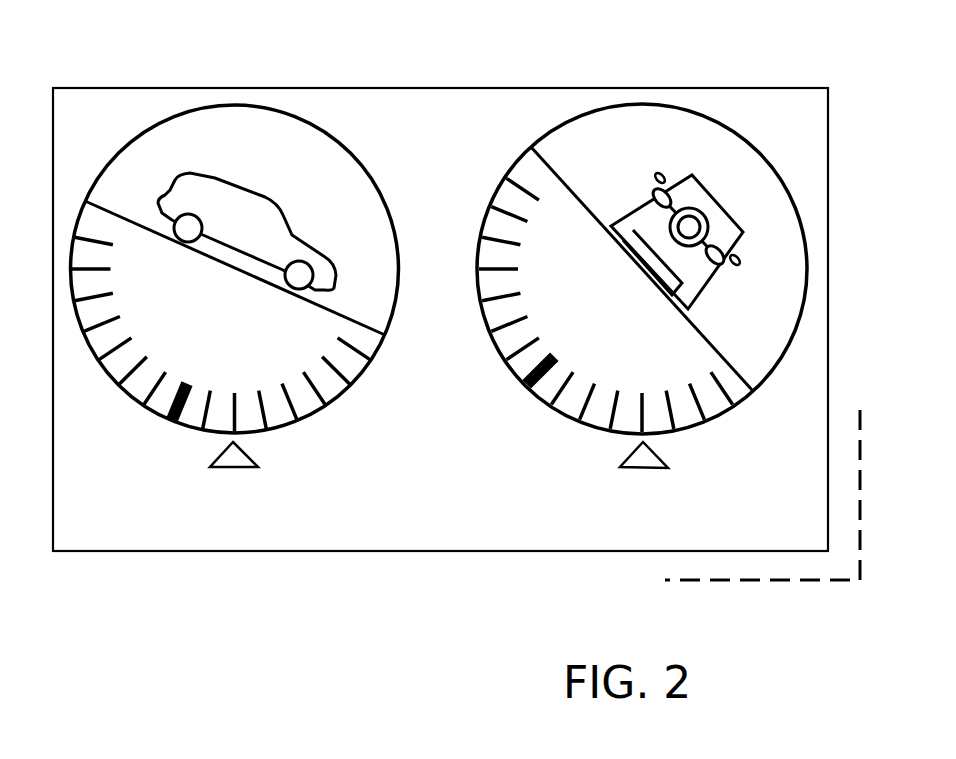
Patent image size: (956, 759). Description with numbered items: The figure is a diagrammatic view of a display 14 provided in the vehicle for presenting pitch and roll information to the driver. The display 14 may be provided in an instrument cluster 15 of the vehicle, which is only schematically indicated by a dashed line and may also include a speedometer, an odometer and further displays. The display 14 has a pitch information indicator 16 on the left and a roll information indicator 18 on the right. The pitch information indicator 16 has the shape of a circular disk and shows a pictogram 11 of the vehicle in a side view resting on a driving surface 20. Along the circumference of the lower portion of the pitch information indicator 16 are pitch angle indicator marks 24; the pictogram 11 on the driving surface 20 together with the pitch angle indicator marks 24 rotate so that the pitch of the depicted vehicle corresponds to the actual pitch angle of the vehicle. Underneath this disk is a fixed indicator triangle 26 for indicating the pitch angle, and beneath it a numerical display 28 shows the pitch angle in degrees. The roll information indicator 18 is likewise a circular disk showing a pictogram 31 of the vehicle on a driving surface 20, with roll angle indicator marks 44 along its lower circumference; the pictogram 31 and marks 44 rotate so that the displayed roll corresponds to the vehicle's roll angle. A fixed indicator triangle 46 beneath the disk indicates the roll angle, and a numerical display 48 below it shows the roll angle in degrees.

The pictogram of the vehicle 11 is at (195, 187).
The display 14 is at (338, 108).
The instrument cluster 15 is at (800, 583).
The pitch information indicator 16 is at (135, 148).
The roll information indicator 18 is at (573, 118).
The driving surface 20 is at (356, 316).
The pitch angle indicator marks 24 is at (297, 431).
The indicator triangle 26 is at (218, 462).
The numerical display 28 is at (220, 530).
The pictogram of the vehicle 31 is at (703, 195).
The roll angle indicator marks 44 is at (550, 407).
The indicator triangle 46 is at (627, 462).
The numerical display 48 is at (630, 531).